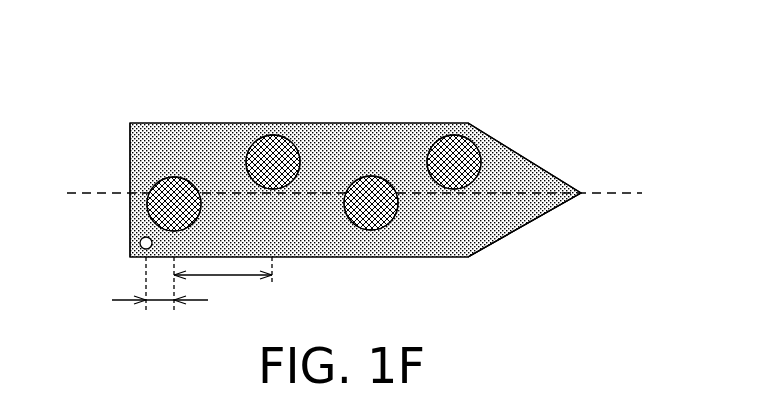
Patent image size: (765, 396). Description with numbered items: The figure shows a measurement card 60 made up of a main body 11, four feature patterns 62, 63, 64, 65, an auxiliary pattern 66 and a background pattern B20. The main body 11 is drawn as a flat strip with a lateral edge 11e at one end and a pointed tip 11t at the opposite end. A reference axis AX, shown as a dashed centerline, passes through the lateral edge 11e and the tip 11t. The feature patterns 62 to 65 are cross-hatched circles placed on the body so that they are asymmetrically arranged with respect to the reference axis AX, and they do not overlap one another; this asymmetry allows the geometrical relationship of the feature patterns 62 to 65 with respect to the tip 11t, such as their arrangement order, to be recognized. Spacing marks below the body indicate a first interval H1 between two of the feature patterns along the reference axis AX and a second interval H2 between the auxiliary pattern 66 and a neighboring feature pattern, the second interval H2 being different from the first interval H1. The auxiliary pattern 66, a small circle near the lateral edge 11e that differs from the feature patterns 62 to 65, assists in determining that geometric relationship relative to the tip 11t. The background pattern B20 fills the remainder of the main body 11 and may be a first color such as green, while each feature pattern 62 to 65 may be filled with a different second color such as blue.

The measurement card 60 is at (132, 52).
The main body 11 is at (412, 143).
The lateral edge 11e is at (130, 153).
The tip 11t is at (582, 193).
The background pattern B20 is at (493, 222).
The reference axis AX is at (372, 195).
The feature pattern 62 is at (482, 163).
The feature pattern 63 is at (382, 177).
The feature pattern 64 is at (286, 136).
The feature pattern 65 is at (194, 176).
The auxiliary pattern 66 is at (140, 243).
The first interval H1 is at (223, 276).
The second interval H2 is at (157, 302).